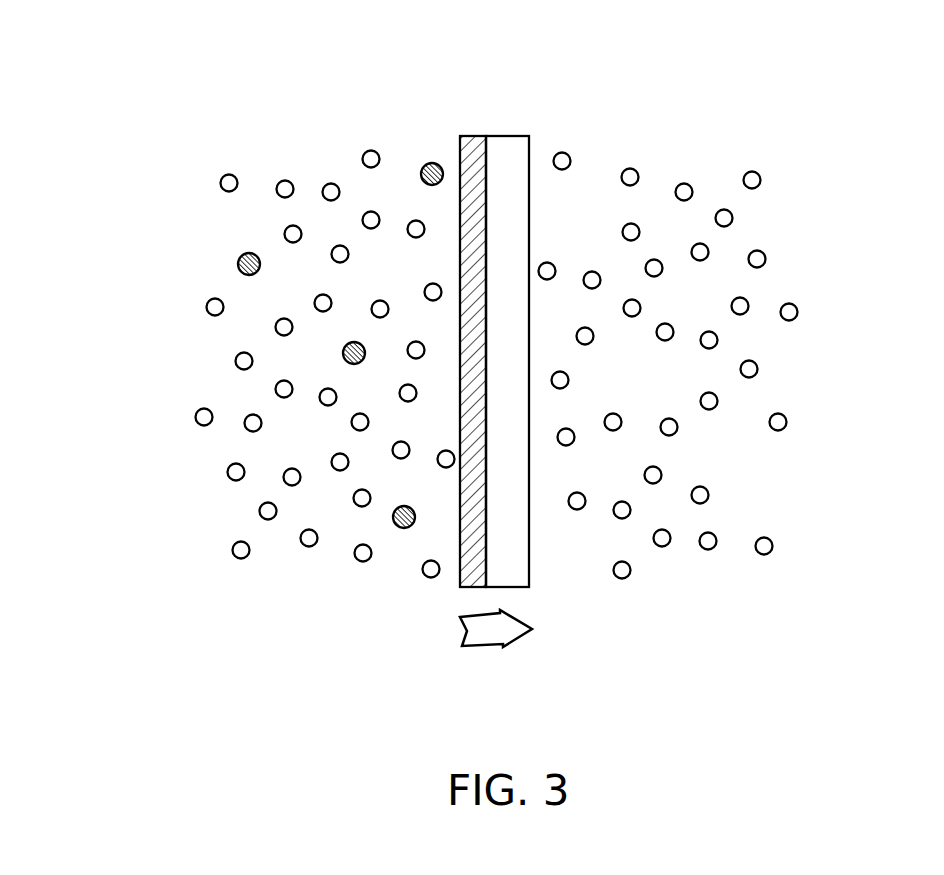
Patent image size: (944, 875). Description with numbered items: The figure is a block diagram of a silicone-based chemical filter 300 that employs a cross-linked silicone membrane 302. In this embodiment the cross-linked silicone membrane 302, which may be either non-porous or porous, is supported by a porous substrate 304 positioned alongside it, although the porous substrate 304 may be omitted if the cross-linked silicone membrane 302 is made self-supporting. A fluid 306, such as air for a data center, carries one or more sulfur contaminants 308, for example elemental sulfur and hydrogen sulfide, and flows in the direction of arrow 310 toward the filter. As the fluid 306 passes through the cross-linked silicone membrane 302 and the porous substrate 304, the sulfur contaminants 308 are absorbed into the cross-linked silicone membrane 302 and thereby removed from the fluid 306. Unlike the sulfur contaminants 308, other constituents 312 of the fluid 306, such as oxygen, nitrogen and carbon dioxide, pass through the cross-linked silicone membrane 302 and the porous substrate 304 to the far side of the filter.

The silicone-based chemical filter 300 is at (170, 80).
The cross-linked silicone membrane 302 is at (475, 136).
The porous substrate 304 is at (505, 136).
The fluid 306 is at (142, 441).
The sulfur contaminants 308 is at (405, 528).
The arrow 310 is at (478, 632).
The other constituents 312 is at (247, 553).